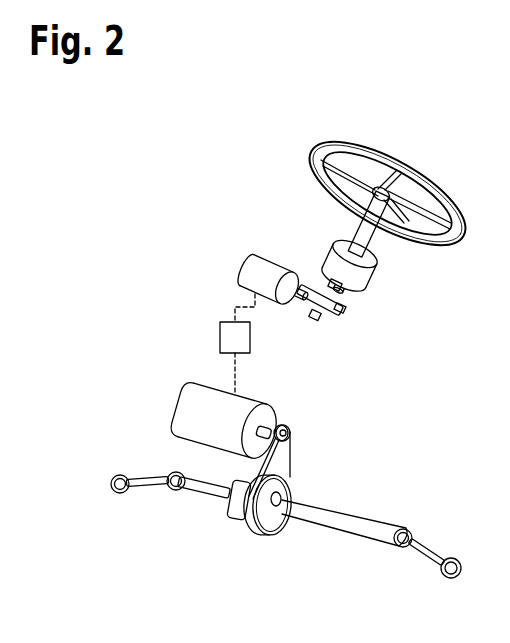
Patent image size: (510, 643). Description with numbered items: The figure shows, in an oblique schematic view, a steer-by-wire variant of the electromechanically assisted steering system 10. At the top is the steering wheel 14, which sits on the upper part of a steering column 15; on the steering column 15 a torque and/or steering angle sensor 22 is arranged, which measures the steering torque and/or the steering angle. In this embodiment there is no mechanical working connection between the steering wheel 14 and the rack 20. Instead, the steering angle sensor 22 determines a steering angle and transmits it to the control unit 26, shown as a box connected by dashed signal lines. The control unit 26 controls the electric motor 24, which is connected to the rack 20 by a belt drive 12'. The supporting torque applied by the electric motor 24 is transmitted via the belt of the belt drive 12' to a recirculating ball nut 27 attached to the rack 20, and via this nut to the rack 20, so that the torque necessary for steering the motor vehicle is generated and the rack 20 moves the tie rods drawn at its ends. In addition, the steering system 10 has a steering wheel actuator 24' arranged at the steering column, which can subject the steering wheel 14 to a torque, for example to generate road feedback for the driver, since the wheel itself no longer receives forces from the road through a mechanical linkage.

The steering system 10 is at (233, 136).
The belt drive 12' is at (348, 426).
The steering wheel 14 is at (418, 192).
The steering column 15 is at (372, 233).
The rack 20 is at (385, 535).
The steering angle sensor 22 is at (360, 283).
The electric motor 24 is at (190, 415).
The steering wheel actuator 24' is at (236, 260).
The control unit 26 is at (219, 336).
The recirculating ball nut 27 is at (238, 500).